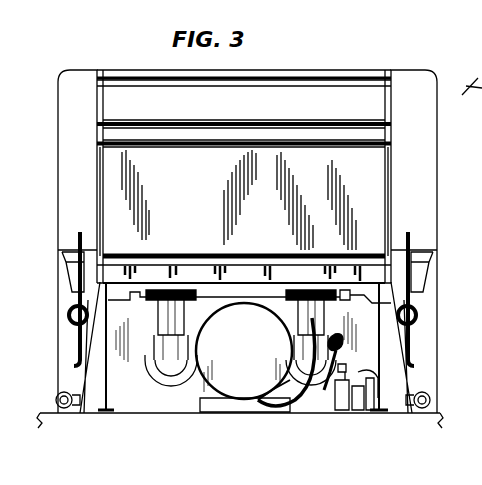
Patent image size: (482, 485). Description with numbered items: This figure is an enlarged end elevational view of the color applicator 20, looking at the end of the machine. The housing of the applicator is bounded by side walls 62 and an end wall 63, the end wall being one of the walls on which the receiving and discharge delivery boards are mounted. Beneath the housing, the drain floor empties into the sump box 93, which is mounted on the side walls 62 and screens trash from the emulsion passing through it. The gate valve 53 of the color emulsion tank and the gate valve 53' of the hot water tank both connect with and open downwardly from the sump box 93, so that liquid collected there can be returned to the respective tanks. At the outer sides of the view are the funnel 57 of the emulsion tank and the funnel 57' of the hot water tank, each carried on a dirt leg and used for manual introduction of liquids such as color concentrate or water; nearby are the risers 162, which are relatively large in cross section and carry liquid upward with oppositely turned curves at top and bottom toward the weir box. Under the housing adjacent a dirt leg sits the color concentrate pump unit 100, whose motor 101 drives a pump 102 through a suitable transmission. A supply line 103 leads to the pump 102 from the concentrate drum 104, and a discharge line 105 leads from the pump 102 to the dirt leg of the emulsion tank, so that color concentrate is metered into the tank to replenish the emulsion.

The color applicator 20 is at (384, 47).
The side wall 62 is at (100, 155).
The end wall 63 is at (116, 200).
The riser 162 is at (62, 223).
The funnel 57' is at (58, 322).
The funnel 57 is at (430, 322).
The sump box 93 is at (250, 277).
The gate valve 53' is at (156, 338).
The gate valve 53 is at (321, 337).
The concentrate drum 104 is at (258, 356).
The discharge line 105 is at (340, 340).
The supply line 103 is at (280, 405).
The pump 102 is at (340, 395).
The color concentrate pump unit 100 is at (355, 418).
The motor 101 is at (366, 378).